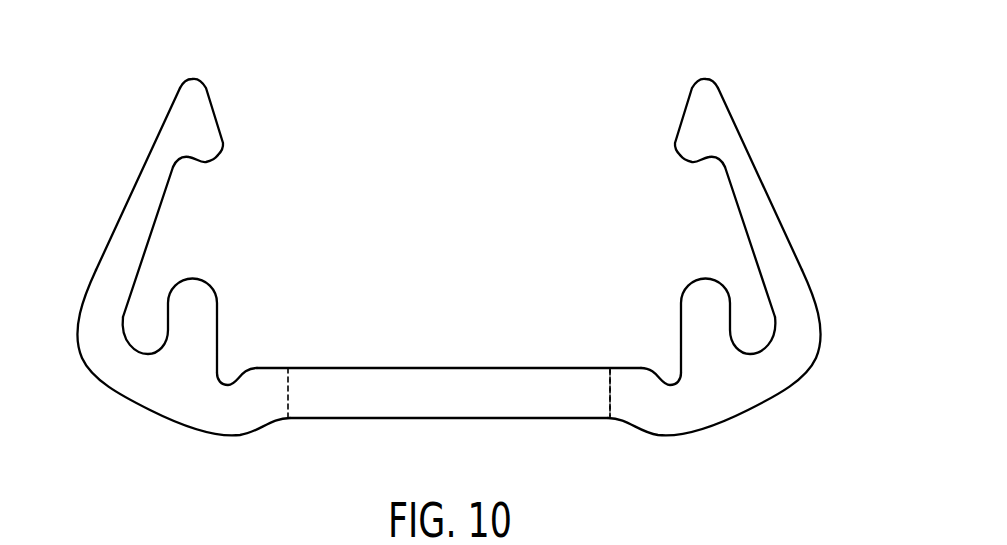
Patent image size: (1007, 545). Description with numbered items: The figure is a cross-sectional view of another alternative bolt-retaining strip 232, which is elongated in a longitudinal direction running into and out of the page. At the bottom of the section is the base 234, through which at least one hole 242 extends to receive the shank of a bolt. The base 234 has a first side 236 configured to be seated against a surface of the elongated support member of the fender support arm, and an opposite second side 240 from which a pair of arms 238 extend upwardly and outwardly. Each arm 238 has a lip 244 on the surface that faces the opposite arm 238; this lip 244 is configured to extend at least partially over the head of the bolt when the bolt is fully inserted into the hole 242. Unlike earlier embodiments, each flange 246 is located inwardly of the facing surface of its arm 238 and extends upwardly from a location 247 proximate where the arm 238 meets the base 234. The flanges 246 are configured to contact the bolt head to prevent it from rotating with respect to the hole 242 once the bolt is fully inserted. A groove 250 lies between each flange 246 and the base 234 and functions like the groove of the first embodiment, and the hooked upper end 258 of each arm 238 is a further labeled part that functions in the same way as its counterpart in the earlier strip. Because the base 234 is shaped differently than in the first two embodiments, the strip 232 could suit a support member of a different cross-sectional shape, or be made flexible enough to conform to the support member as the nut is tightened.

The bolt-retaining strip 232 is at (448, 264).
The base 234 is at (332, 402).
The first side 236 is at (443, 425).
The arm 238 is at (133, 225).
The second side 240 is at (342, 360).
The hole 242 is at (607, 395).
The lip 244 is at (220, 160).
The flange 246 is at (193, 292).
The location 247 is at (148, 376).
The groove 250 is at (230, 385).
The part of bolt-retaining strip 258 is at (218, 104).